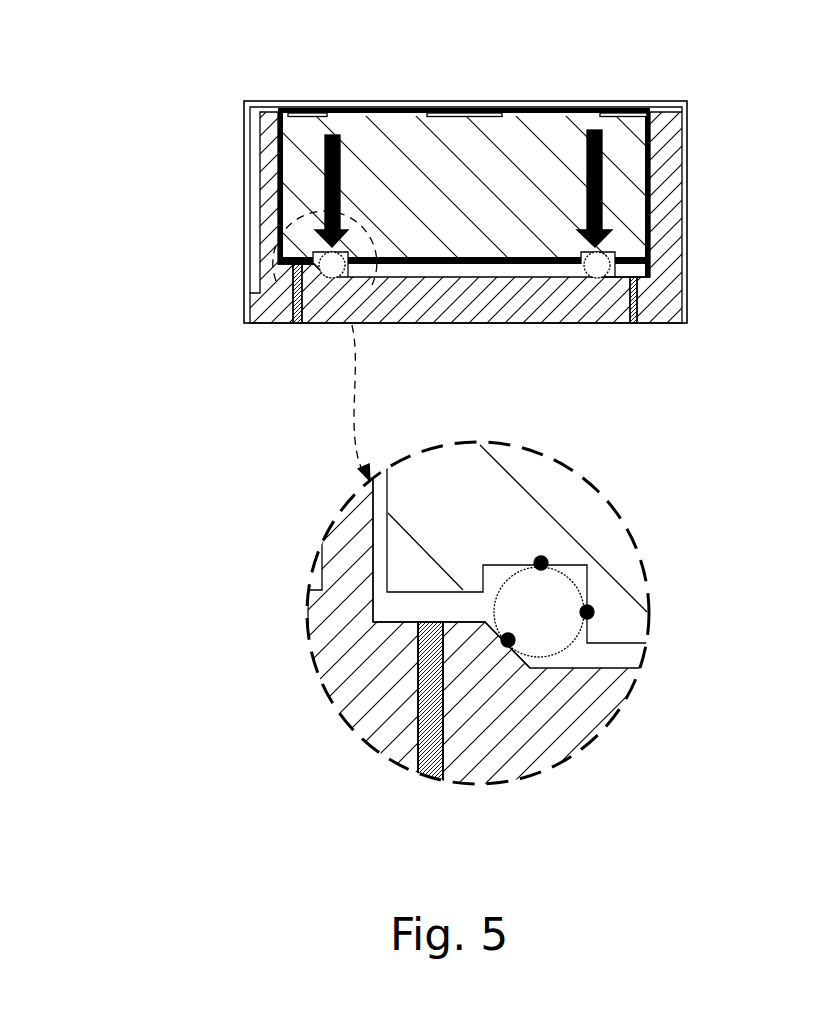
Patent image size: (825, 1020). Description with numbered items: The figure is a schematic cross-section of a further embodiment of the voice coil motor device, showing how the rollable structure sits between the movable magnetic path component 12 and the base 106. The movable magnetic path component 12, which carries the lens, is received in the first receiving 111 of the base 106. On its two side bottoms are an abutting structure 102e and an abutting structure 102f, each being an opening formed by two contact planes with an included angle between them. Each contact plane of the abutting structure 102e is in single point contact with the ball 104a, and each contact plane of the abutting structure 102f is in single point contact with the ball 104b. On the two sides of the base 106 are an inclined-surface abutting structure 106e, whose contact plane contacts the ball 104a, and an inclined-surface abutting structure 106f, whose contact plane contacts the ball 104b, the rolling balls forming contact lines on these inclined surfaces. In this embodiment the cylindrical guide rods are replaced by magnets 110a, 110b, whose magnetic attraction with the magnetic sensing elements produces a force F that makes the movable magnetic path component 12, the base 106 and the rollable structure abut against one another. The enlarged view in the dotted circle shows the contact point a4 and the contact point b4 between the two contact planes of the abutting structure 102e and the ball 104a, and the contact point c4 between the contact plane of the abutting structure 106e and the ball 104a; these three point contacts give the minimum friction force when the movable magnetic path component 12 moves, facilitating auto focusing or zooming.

The movable magnetic path component 12 is at (417, 135).
The first receiving 111 is at (285, 113).
The base 106 is at (267, 206).
The magnet 110a is at (297, 282).
The magnet 110b is at (633, 278).
The inclined-surface abutting structure 106e is at (315, 273).
The inclined-surface abutting structure 106f is at (607, 275).
The ball 104a is at (335, 272).
The ball 104b is at (600, 268).
The abutting structure 102f is at (585, 268).
The abutting structure 102e is at (590, 558).
The applied force F is at (330, 161).
The contact point a4 is at (548, 562).
The contact point b4 is at (594, 613).
The contact point c4 is at (510, 648).